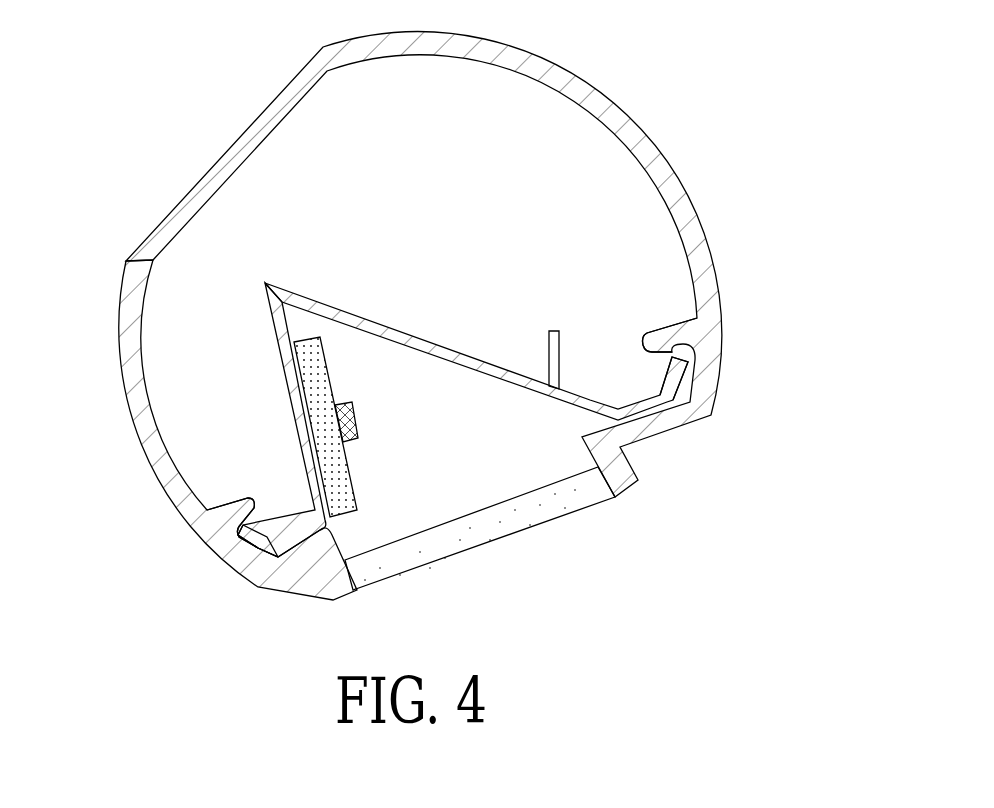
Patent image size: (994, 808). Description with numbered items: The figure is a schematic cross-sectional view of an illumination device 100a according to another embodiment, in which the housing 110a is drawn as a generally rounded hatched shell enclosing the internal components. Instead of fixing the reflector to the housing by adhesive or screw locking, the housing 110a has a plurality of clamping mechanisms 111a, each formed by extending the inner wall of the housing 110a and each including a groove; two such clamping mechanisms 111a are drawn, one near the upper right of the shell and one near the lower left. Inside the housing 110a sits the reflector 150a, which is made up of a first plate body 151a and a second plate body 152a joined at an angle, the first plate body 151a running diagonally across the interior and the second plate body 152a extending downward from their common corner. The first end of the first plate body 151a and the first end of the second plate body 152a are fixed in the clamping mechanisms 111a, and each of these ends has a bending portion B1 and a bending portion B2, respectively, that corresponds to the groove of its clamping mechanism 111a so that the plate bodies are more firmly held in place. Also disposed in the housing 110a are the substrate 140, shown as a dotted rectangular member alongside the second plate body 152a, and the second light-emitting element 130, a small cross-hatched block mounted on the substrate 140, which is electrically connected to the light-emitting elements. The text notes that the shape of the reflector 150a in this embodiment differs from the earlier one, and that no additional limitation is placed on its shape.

The illumination device 100a is at (125, 44).
The housing 110a is at (612, 97).
The clamping mechanism 111a is at (663, 365).
The reflector 150a is at (348, 361).
The first plate body 151a is at (337, 313).
The second plate body 152a is at (277, 338).
The substrate 140 is at (352, 482).
The second light-emitting element 130 is at (358, 425).
The bending portion B1 is at (762, 378).
The bending portion B2 is at (229, 587).